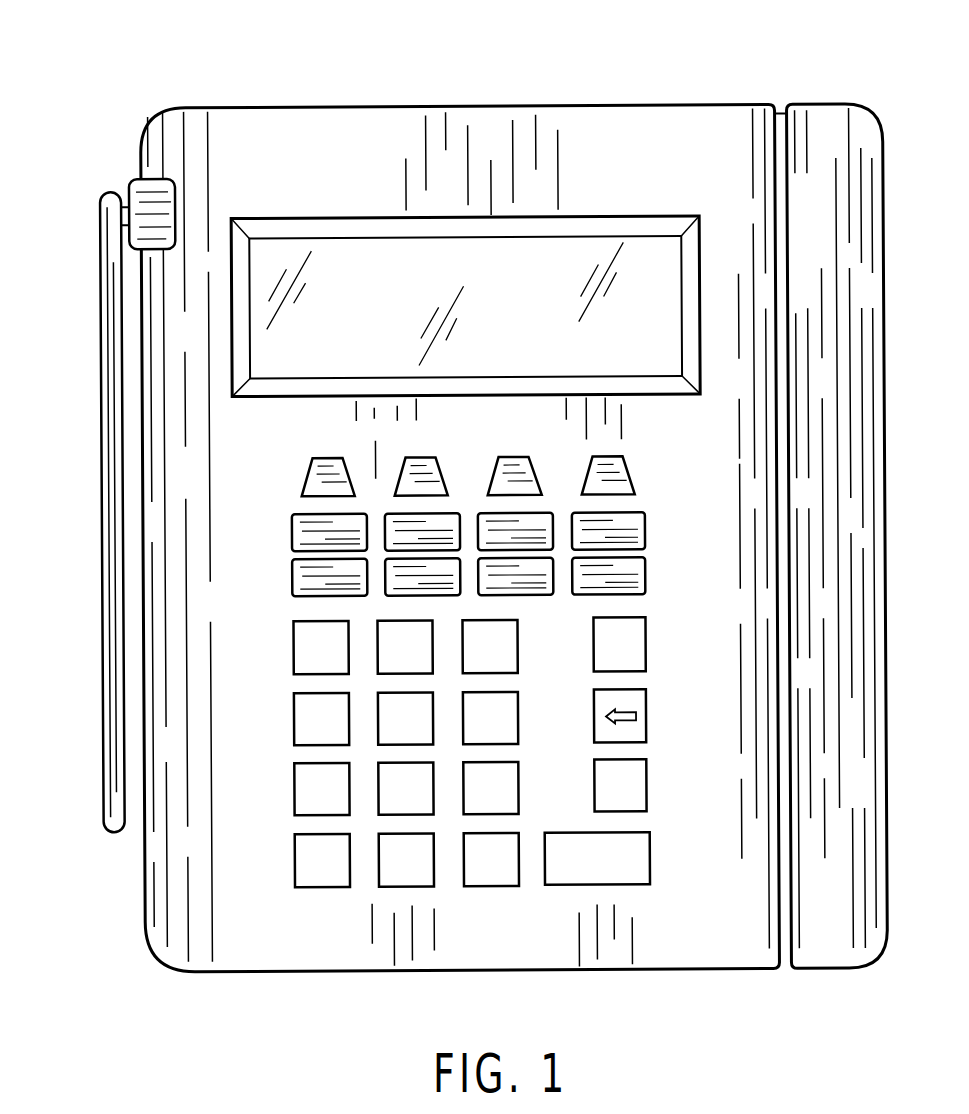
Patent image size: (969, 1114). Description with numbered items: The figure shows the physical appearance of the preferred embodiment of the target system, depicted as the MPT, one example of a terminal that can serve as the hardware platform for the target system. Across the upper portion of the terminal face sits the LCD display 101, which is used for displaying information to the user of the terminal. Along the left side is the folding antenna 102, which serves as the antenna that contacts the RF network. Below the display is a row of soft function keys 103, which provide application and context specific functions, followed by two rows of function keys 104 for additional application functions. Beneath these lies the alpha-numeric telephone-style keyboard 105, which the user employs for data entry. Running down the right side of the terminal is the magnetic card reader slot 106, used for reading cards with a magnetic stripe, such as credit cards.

The LCD display 101 is at (550, 306).
The folding antenna 102 is at (100, 287).
The soft function keys 103 is at (611, 479).
The function keys 104 is at (643, 572).
The alpha-numeric telephone-style keyboard 105 is at (380, 878).
The magnetic card reader slot 106 is at (779, 209).